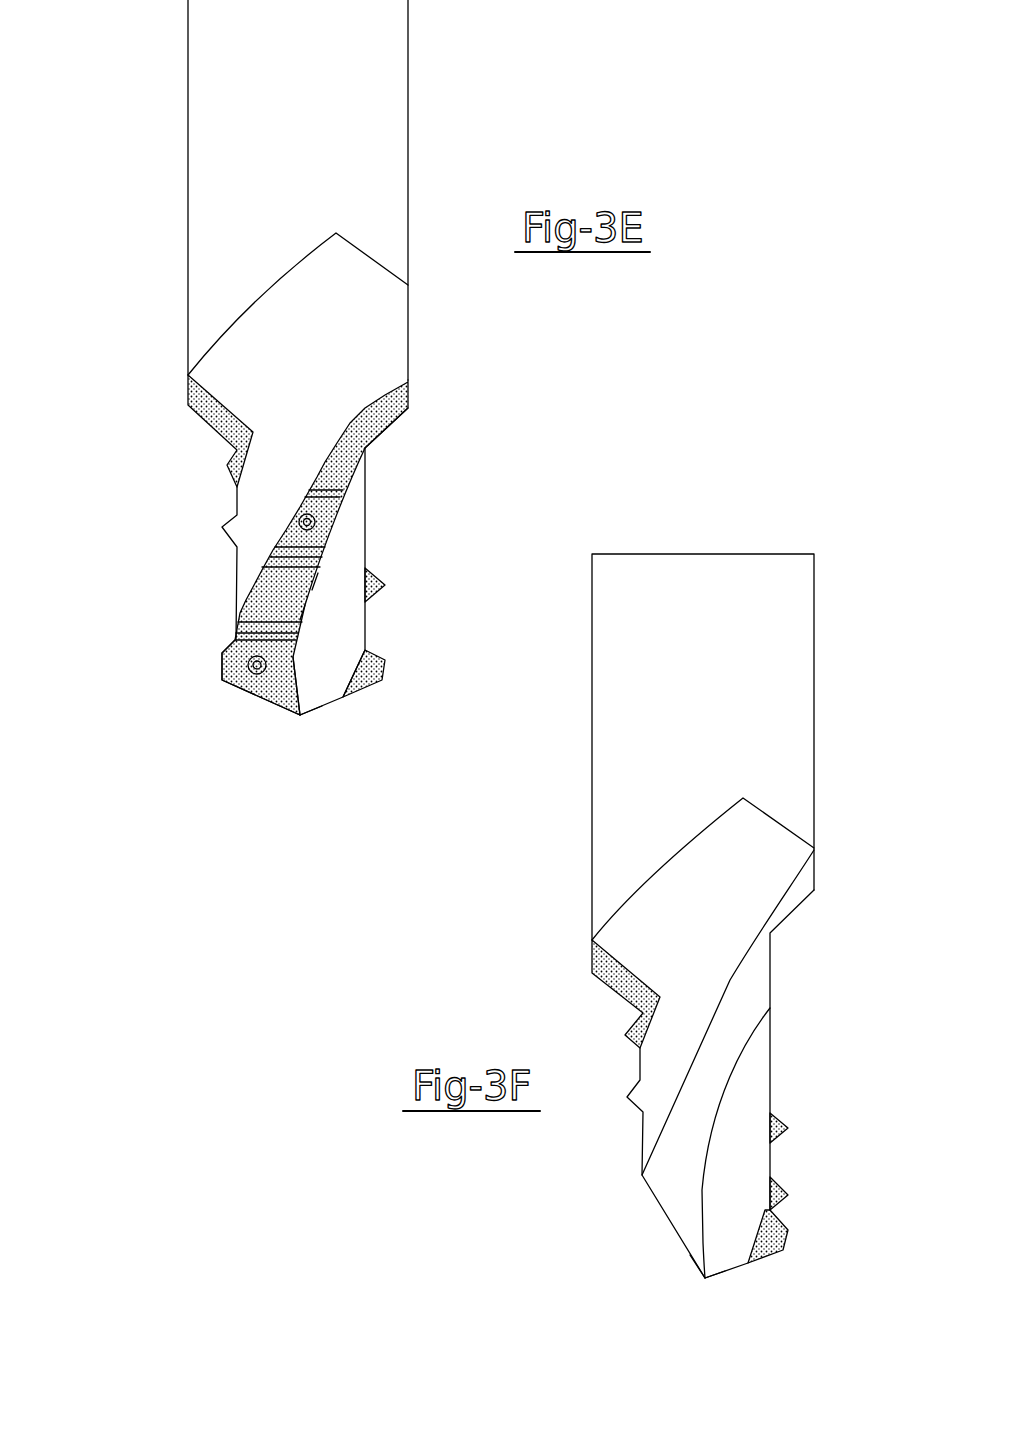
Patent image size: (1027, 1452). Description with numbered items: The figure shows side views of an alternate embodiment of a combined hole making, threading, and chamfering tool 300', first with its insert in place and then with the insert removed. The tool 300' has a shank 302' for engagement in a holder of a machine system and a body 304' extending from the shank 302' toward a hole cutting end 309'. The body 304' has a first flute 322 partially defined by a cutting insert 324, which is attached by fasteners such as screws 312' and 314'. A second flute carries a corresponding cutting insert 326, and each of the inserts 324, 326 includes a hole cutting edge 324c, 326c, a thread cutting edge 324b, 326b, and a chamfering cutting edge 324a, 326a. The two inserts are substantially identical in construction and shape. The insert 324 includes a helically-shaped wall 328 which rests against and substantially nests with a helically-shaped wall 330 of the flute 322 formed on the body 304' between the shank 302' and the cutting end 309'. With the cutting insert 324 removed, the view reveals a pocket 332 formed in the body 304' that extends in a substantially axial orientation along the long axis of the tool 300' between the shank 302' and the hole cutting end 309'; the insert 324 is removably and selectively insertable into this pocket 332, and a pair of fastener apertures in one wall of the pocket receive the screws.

In FIG. 3E, the combined hole making, threading, and chamfering tool 300' is at (293, 405).
In FIG. 3F, the combined hole making, threading, and chamfering tool 300' is at (689, 939).
In FIG. 3E, the shank 302' is at (354, 190).
In FIG. 3F, the shank 302' is at (754, 747).
In FIG. 3E, the body 304' is at (243, 304).
In FIG. 3F, the body 304' is at (642, 867).
In FIG. 3E, the hole cutting end 309' is at (327, 734).
In FIG. 3F, the hole cutting end 309' is at (699, 1289).
In FIG. 3E, the screw 312' is at (192, 559).
In FIG. 3E, the screw 314' is at (185, 660).
In FIG. 3E, the first flute 322 is at (340, 642).
In FIG. 3F, the first flute 322 is at (757, 860).
In FIG. 3E, the cutting insert 324 is at (411, 422).
In FIG. 3E, the chamfering cutting edge 324a is at (384, 430).
In FIG. 3E, the thread cutting edge 324b is at (337, 491).
In FIG. 3E, the hole cutting edge 324c is at (253, 688).
In FIG. 3E, the cutting insert 326 is at (211, 480).
In FIG. 3F, the cutting insert 326 is at (614, 1015).
In FIG. 3E, the chamfering cutting edge 326a is at (192, 408).
In FIG. 3F, the chamfering cutting edge 326a is at (596, 975).
In FIG. 3E, the thread cutting edge 326b is at (227, 465).
In FIG. 3E, the hole cutting edge 326c is at (363, 688).
In FIG. 3F, the hole cutting edge 326c is at (773, 1257).
In FIG. 3E, the helically-shaped wall 328 is at (305, 572).
In FIG. 3E, the helically-shaped wall 330 is at (304, 600).
In FIG. 3F, the helically-shaped wall 330 is at (710, 1023).
In FIG. 3F, the pocket 332 is at (717, 1092).